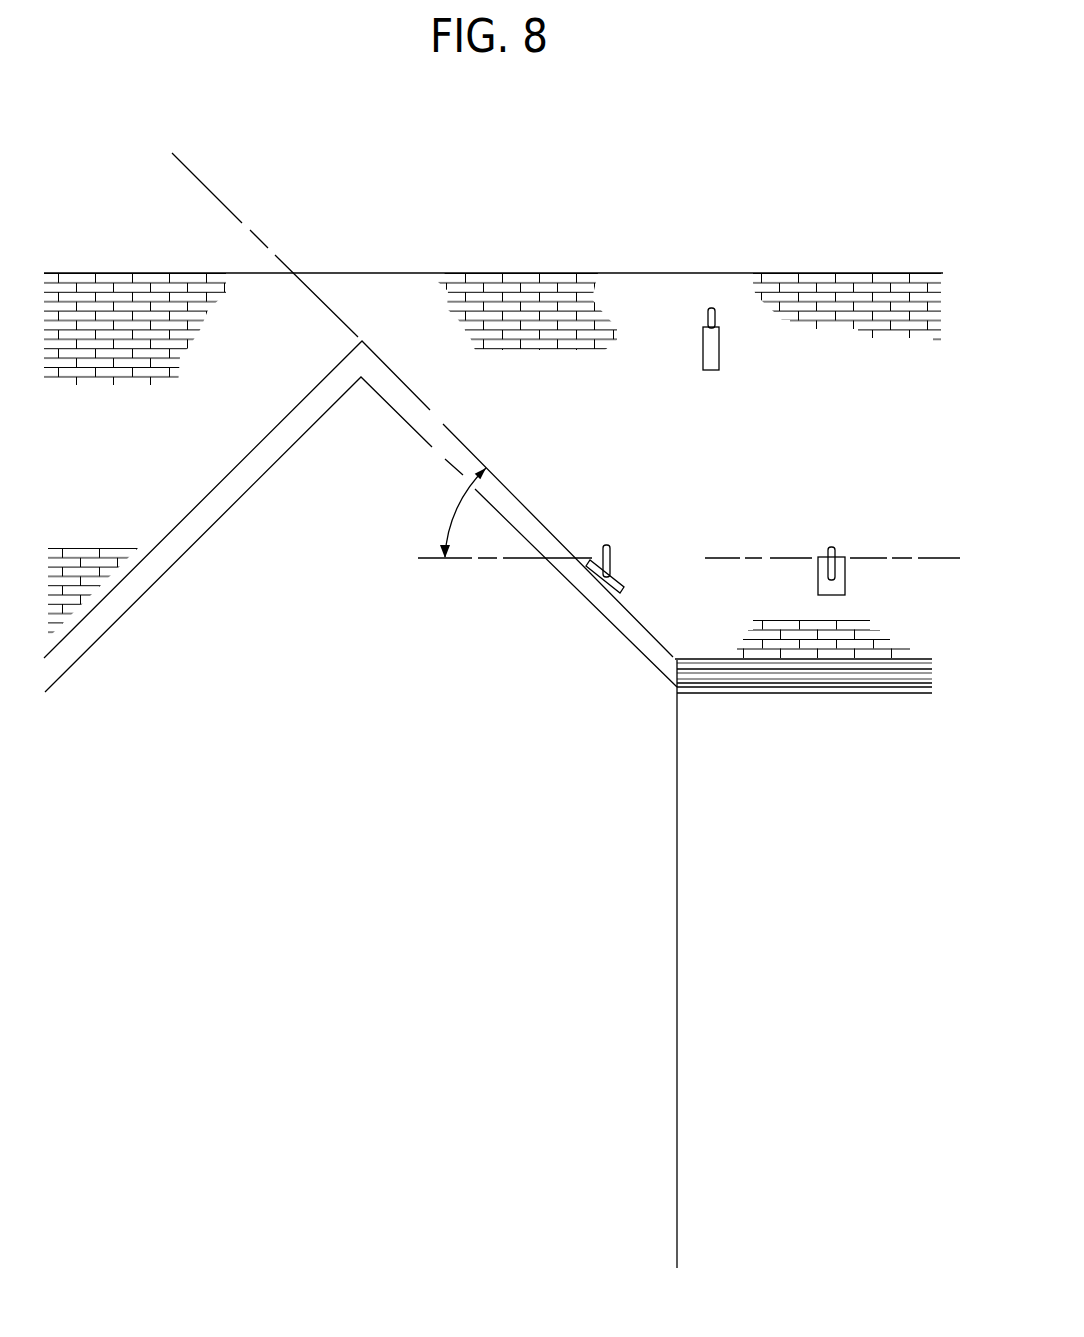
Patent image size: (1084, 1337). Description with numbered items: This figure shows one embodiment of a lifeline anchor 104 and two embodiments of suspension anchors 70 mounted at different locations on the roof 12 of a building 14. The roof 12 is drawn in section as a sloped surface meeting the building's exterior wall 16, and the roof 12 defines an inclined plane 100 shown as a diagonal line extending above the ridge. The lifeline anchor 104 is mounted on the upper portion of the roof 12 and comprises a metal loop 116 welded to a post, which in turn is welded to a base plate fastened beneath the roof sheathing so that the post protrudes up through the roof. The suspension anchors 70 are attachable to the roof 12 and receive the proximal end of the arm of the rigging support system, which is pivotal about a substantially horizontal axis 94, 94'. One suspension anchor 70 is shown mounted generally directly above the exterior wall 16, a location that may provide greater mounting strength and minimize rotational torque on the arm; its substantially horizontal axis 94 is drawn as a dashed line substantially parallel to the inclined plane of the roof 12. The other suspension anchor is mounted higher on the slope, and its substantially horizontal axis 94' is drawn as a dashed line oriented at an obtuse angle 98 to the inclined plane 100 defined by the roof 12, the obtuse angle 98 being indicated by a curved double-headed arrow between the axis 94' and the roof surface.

The roof 12 is at (535, 298).
The building 14 is at (118, 297).
The exterior wall 16 is at (420, 473).
The suspension anchor 70 is at (831, 545).
The substantially horizontal axis 94 is at (832, 524).
The substantially horizontal axis 94' is at (505, 590).
The obtuse angle 98 is at (453, 509).
The inclined plane 100 is at (318, 307).
The lifeline anchor 104 is at (720, 343).
The metal loop 116 is at (705, 317).